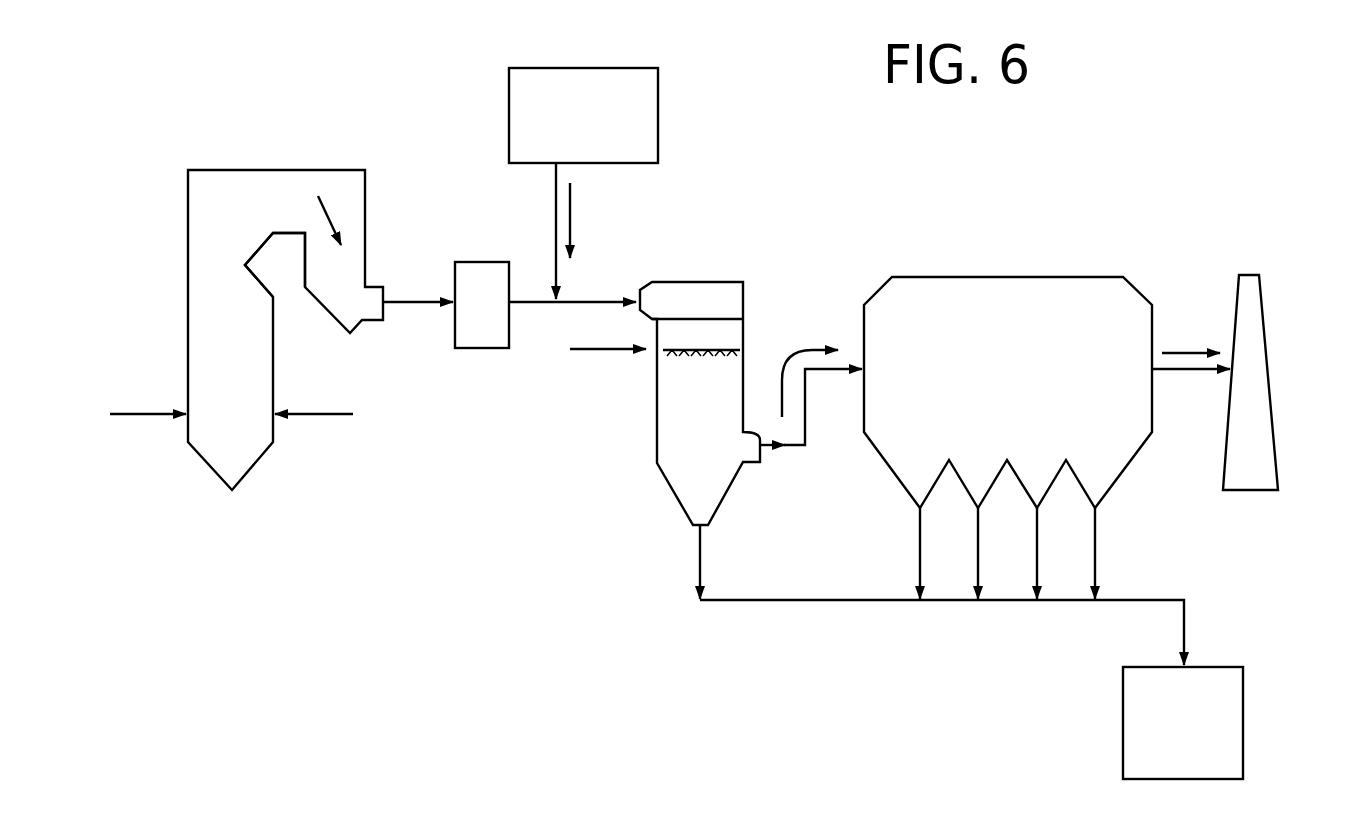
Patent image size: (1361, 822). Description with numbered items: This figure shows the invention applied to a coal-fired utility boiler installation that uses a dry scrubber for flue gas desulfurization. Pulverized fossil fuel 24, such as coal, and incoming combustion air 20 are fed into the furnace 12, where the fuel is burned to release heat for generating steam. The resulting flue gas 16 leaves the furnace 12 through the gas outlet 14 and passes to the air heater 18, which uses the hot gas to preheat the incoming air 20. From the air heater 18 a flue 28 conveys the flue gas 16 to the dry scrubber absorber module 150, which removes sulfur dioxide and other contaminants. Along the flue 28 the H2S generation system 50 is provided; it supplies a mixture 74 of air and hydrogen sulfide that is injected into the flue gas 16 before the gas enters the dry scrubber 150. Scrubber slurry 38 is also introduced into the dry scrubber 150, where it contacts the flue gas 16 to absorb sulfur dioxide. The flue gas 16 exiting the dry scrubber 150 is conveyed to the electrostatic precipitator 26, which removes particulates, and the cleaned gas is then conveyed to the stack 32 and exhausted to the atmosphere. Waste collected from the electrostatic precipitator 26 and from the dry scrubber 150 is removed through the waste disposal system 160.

The furnace 12 is at (215, 365).
The gas outlet 14 is at (323, 293).
The flue gas 16 is at (336, 208).
The air heater 18 is at (473, 313).
The air 20 is at (137, 418).
The fossil fuel 24 is at (323, 418).
The electrostatic precipitator 26 is at (998, 382).
The flue 28 is at (523, 304).
The stack 32 is at (1257, 438).
The wet scrubber slurry 38 is at (600, 354).
The H2S generation system 50 is at (568, 128).
The mixture of air and H2S 74 is at (574, 202).
The dry scrubber absorber module 150 is at (684, 420).
The waste disposal system 160 is at (1220, 675).